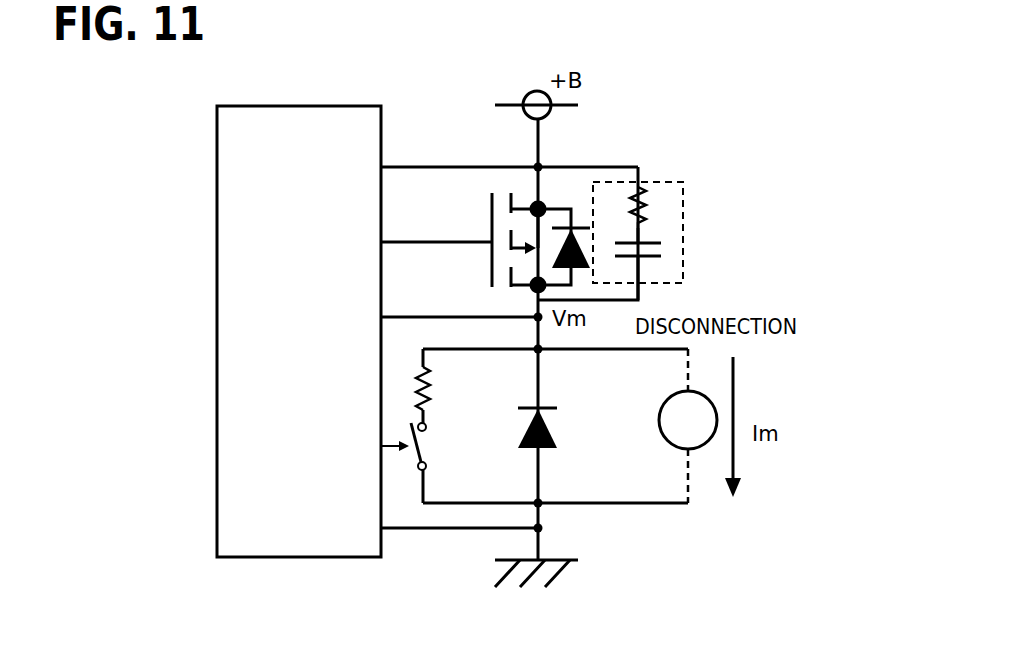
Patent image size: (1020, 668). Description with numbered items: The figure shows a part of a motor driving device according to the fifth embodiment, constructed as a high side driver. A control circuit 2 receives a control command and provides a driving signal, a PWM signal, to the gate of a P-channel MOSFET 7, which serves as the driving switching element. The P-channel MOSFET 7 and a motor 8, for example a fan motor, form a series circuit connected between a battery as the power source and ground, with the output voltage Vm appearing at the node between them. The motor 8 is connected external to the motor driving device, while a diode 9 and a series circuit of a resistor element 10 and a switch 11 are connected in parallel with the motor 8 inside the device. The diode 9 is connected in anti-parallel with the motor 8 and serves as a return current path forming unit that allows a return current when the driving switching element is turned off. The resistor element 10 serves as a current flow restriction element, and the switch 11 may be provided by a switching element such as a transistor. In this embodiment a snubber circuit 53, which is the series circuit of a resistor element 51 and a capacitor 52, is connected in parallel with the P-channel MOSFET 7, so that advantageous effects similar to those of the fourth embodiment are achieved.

The control circuit 2 is at (291, 106).
The P-channel MOSFET 7 is at (480, 254).
The motor 8 is at (668, 400).
The diode 9 is at (557, 425).
The resistor element 10 is at (437, 393).
The switch 11 is at (412, 455).
The resistor element 51 is at (650, 209).
The capacitor 52 is at (665, 250).
The snubber circuit 53 is at (676, 181).